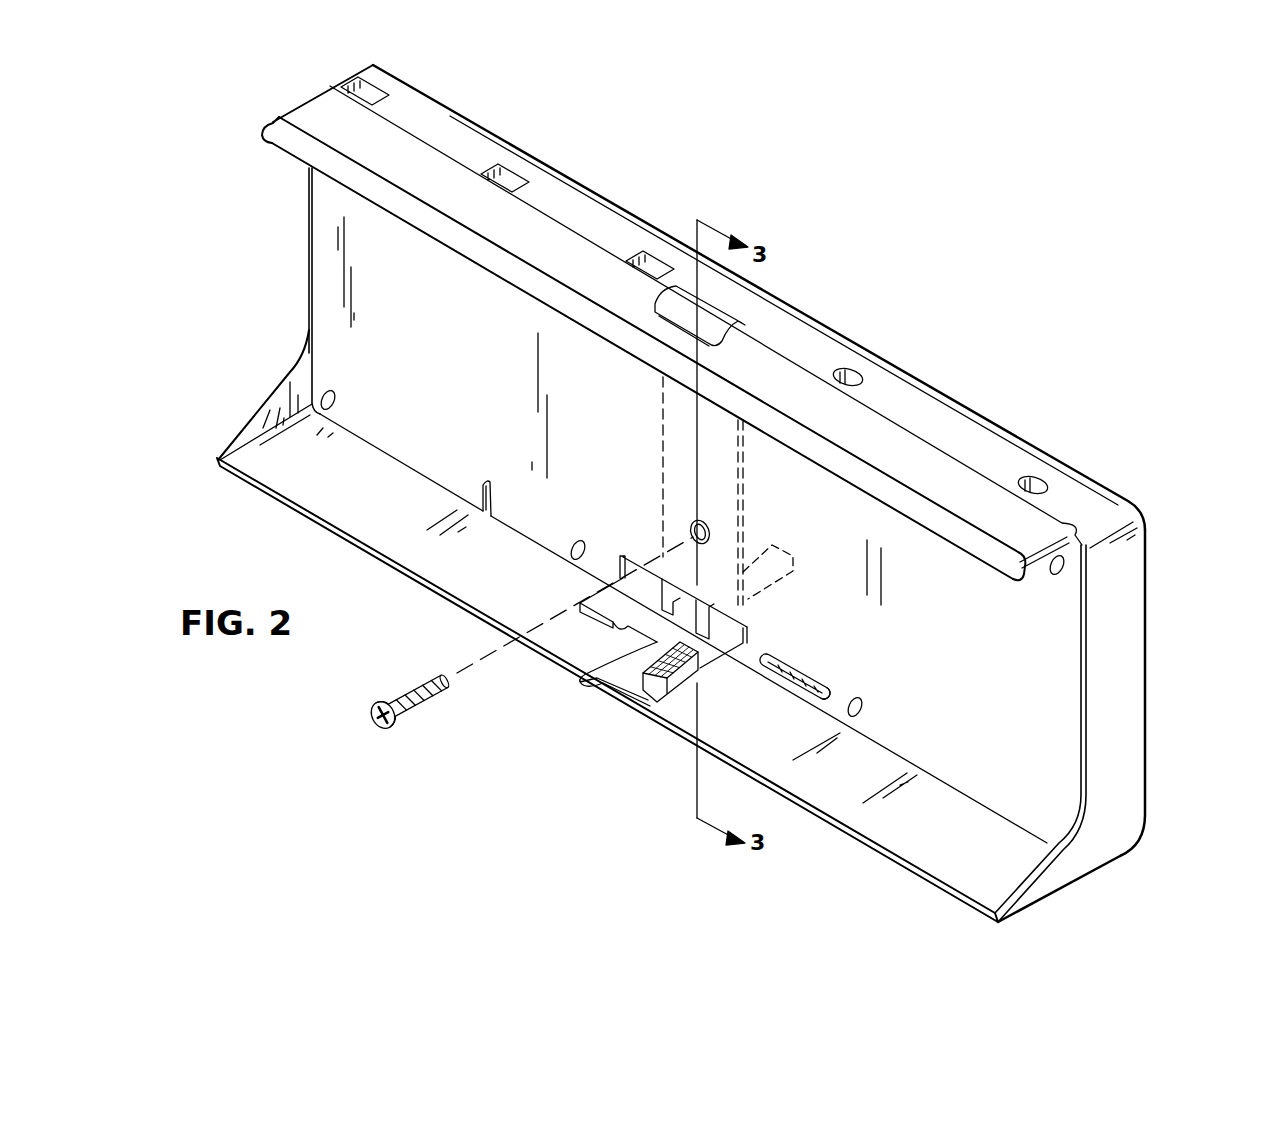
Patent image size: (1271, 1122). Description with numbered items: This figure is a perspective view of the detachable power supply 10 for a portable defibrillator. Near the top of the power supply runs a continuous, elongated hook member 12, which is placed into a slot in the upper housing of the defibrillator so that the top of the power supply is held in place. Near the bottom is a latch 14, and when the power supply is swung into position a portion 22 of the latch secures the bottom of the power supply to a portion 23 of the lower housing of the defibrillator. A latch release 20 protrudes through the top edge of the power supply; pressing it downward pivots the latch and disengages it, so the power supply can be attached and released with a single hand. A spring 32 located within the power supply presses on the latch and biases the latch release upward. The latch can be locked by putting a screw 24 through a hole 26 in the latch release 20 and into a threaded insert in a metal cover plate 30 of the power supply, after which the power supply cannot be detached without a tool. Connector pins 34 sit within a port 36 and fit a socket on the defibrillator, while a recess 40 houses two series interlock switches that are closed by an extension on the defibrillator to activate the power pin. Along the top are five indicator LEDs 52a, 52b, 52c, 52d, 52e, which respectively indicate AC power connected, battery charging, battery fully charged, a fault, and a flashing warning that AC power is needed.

The detachable power supply 10 is at (1128, 556).
The hook member 12 is at (315, 118).
The latch 14 is at (583, 677).
The latch release 20 is at (677, 283).
The portion of latch 22 is at (628, 696).
The portion of lower housing 23 is at (673, 702).
The screw 24 is at (393, 697).
The hole 26 is at (703, 521).
The metal cover plate 30 is at (1037, 738).
The spring 32 is at (770, 545).
The pins 34 is at (764, 667).
The port 36 is at (829, 692).
The recess 40 is at (482, 497).
The yellow indicator LED 52a is at (362, 87).
The yellow indicator LED 52b is at (506, 173).
The green indicator LED 52c is at (652, 259).
The yellow indicator LED 52d is at (851, 372).
The flashing yellow indicator LED 52e is at (1037, 480).